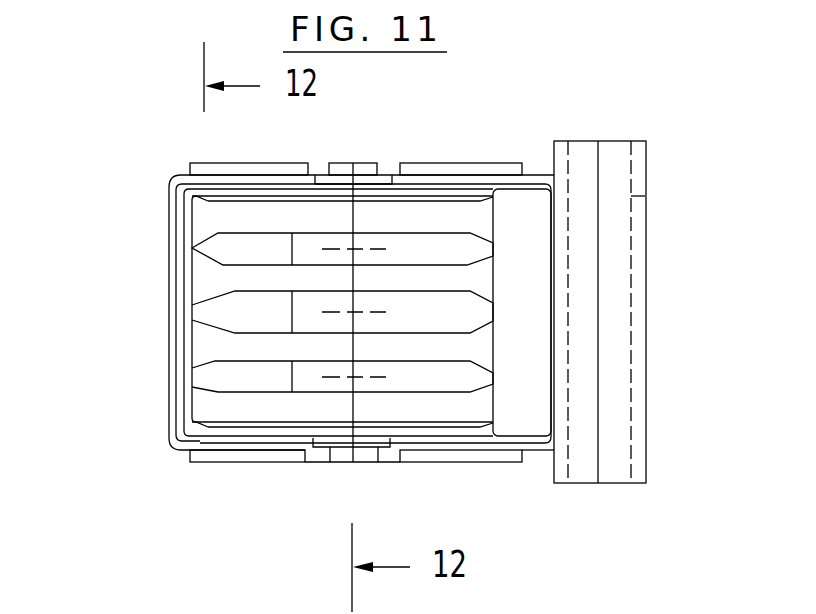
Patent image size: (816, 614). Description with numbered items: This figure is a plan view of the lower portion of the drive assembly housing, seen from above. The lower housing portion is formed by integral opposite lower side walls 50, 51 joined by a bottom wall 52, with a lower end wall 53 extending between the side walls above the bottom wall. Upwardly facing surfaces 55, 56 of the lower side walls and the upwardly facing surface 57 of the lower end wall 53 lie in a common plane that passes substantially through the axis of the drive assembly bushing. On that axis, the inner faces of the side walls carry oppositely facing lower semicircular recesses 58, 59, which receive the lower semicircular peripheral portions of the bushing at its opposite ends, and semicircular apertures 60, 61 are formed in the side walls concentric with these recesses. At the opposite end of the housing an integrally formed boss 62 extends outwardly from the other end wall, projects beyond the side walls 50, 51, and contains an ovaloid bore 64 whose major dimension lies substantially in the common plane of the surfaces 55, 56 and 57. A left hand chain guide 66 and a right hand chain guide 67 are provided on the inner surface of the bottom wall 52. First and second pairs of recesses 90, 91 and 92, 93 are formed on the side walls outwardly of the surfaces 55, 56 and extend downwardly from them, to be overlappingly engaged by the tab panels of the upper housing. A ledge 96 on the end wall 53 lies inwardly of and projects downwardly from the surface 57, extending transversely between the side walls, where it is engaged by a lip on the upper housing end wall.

The lower side wall 50 is at (535, 165).
The lower side wall 51 is at (532, 450).
The bottom wall 52 is at (457, 326).
The lower end wall 53 is at (167, 238).
The upwardly facing surface 55 is at (422, 177).
The upwardly facing surface 56 is at (475, 443).
The upwardly facing surface 57 is at (175, 302).
The lower semicircular recess 58 is at (383, 173).
The lower semicircular recess 59 is at (378, 450).
The semicircular aperture 60 is at (327, 165).
The semicircular aperture 61 is at (330, 450).
The boss 62 is at (648, 297).
The ovaloid bore 64 is at (648, 196).
The left hand chain guide 66 is at (202, 235).
The right hand chain guide 67 is at (202, 388).
The recess 90 is at (228, 168).
The recess 91 is at (247, 453).
The recess 92 is at (453, 164).
The recess 93 is at (421, 462).
The ledge 96 is at (183, 352).